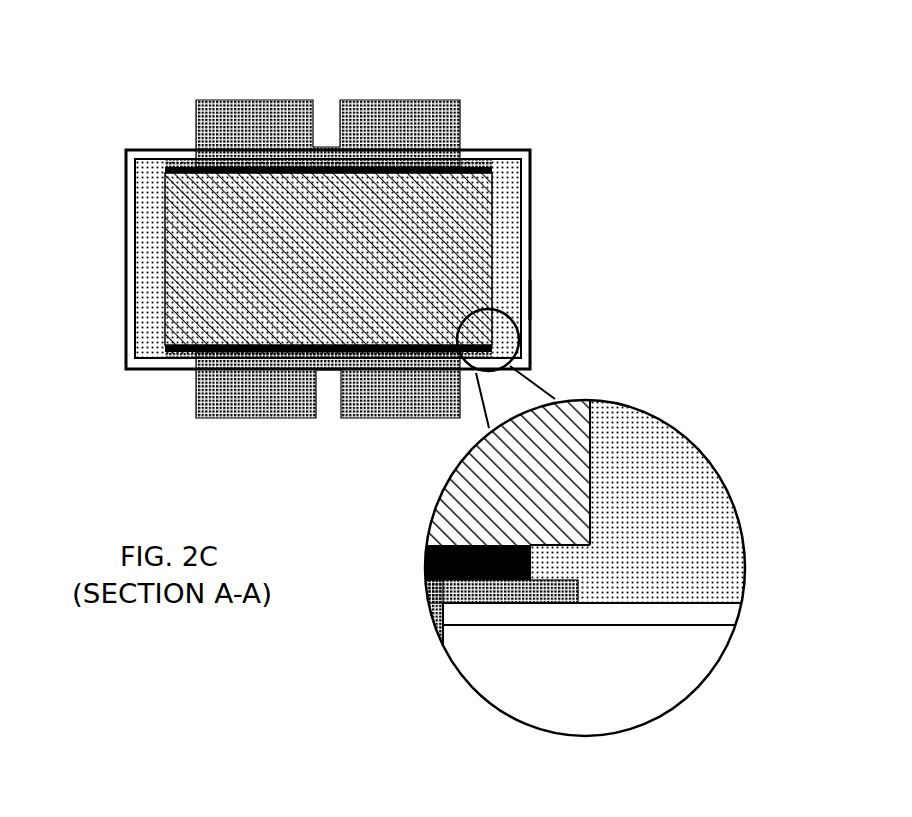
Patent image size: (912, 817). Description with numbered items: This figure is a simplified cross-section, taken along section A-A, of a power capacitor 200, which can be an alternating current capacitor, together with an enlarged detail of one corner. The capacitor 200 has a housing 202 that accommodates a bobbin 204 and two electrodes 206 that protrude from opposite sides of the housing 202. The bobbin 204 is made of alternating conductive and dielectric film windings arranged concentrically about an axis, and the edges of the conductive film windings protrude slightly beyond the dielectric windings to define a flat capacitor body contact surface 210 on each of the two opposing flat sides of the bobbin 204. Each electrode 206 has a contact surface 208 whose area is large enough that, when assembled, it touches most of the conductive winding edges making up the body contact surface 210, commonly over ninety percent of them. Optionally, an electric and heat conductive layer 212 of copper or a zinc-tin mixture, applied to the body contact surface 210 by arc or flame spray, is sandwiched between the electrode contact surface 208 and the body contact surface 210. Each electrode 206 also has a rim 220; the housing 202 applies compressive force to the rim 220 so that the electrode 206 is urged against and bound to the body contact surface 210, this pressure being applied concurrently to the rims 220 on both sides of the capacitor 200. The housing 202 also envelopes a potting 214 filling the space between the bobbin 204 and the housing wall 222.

The power capacitor 200 is at (241, 70).
The housing 202 is at (166, 150).
The bobbin 204 is at (445, 252).
The electrode 206 is at (414, 100).
The contact surface 208 is at (165, 172).
The capacitor body contact surface 210 is at (492, 168).
The electric and heat conductive layer 212 is at (223, 343).
The potting 214 is at (507, 250).
The rim 220 is at (176, 358).
The wall 222 is at (527, 297).